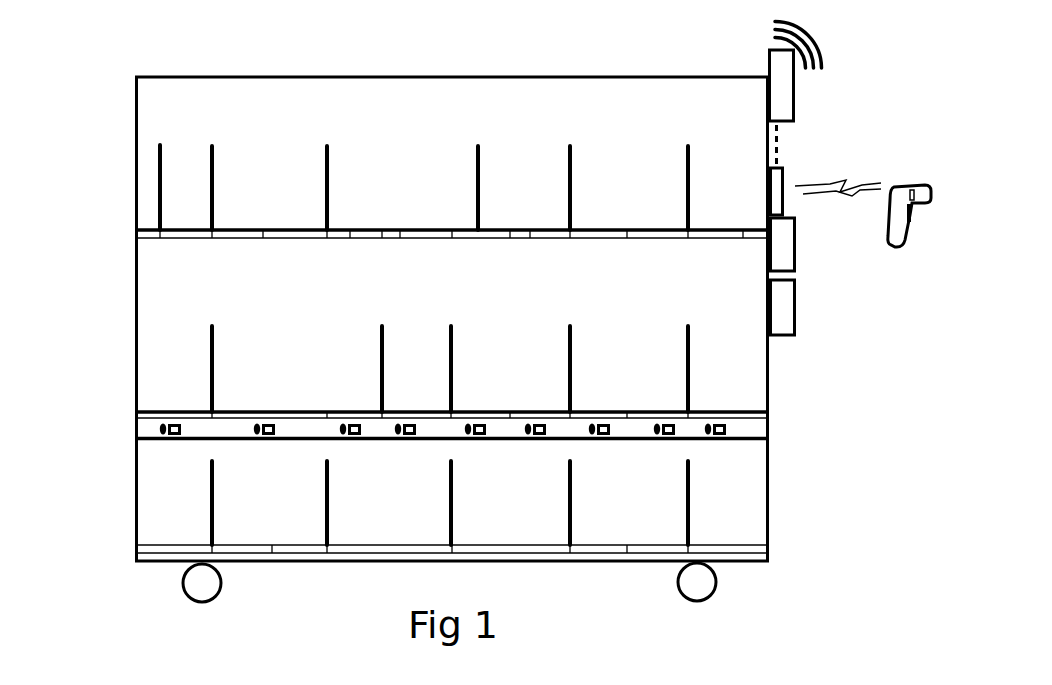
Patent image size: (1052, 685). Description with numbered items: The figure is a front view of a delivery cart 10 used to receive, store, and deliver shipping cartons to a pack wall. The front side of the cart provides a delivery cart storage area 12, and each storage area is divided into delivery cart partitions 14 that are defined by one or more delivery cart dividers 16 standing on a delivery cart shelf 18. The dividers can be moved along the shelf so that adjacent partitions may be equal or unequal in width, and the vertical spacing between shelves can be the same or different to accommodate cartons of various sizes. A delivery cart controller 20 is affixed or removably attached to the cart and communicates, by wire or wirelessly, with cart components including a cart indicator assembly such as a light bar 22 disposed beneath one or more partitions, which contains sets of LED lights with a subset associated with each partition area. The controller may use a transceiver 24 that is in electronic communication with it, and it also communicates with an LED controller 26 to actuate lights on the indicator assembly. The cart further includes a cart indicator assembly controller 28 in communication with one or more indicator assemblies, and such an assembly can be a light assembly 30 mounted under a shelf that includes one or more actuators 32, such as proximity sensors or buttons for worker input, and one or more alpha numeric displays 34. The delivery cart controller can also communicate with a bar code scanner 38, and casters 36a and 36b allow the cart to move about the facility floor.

The delivery cart 10 is at (412, 35).
The delivery cart storage area 12 is at (118, 145).
The delivery cart partition 14 is at (150, 213).
The delivery cart divider 16 is at (210, 151).
The delivery cart shelf 18 is at (136, 232).
The delivery cart controller 20 is at (785, 182).
The light bar 22 is at (139, 238).
The transceiver 24 is at (797, 76).
The LED controller 26 is at (796, 237).
The cart indicator assembly controller 28 is at (797, 296).
The light assembly 30 is at (768, 433).
The actuator 32 is at (707, 441).
The alpha numeric display 34 is at (734, 441).
The caster 36a is at (183, 582).
The caster 36b is at (677, 582).
The bar code scanner 38 is at (920, 185).